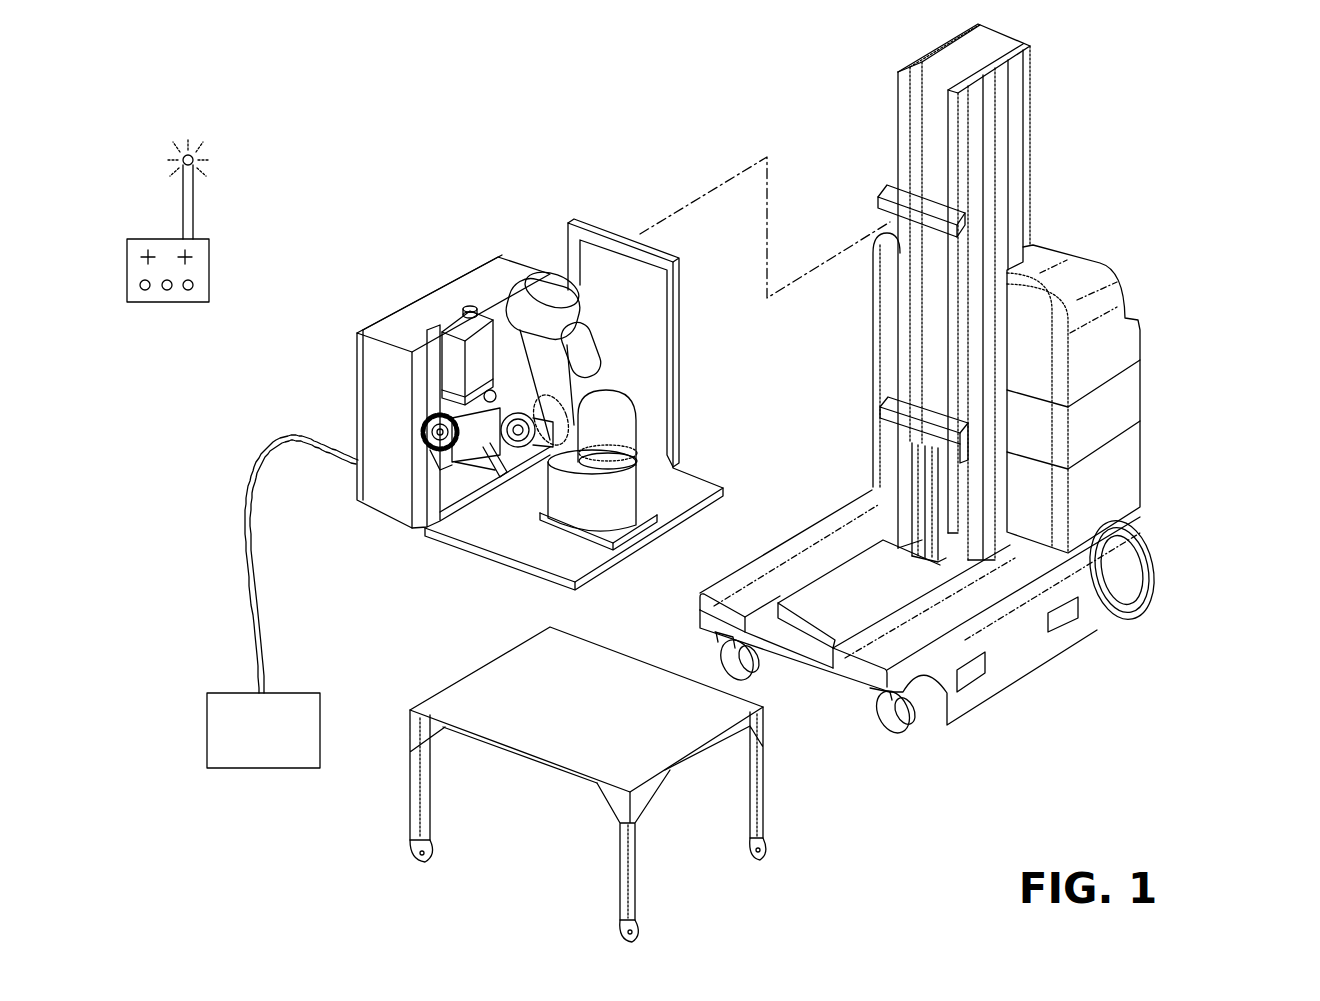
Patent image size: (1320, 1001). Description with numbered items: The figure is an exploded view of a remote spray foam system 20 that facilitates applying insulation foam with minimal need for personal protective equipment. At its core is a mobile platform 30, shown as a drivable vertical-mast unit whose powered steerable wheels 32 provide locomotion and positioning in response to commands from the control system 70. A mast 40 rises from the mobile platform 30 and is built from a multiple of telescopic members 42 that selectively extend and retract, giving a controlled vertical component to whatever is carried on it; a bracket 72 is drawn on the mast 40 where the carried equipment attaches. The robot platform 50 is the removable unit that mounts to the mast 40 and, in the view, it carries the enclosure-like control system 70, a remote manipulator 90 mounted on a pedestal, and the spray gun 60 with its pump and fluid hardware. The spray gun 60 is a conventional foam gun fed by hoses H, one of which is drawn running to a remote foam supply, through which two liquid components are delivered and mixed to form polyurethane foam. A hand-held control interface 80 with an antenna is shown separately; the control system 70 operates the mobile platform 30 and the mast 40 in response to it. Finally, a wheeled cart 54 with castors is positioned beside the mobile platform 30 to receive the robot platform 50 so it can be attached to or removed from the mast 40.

The remote spray foam system 20 is at (1228, 232).
The mobile platform 30 is at (1166, 436).
The powered steerable wheels 32 is at (1125, 571).
The mast 40 is at (1068, 204).
The telescopic members 42 is at (1015, 118).
The carriage bracket 72 is at (870, 172).
The robot platform 50 is at (516, 236).
The control system 70 is at (415, 312).
The spray gun 60 is at (462, 495).
The remote manipulator 90 is at (625, 420).
The control interface 80 is at (240, 243).
The hoses H is at (258, 548).
The wheeled cart 54 is at (795, 803).